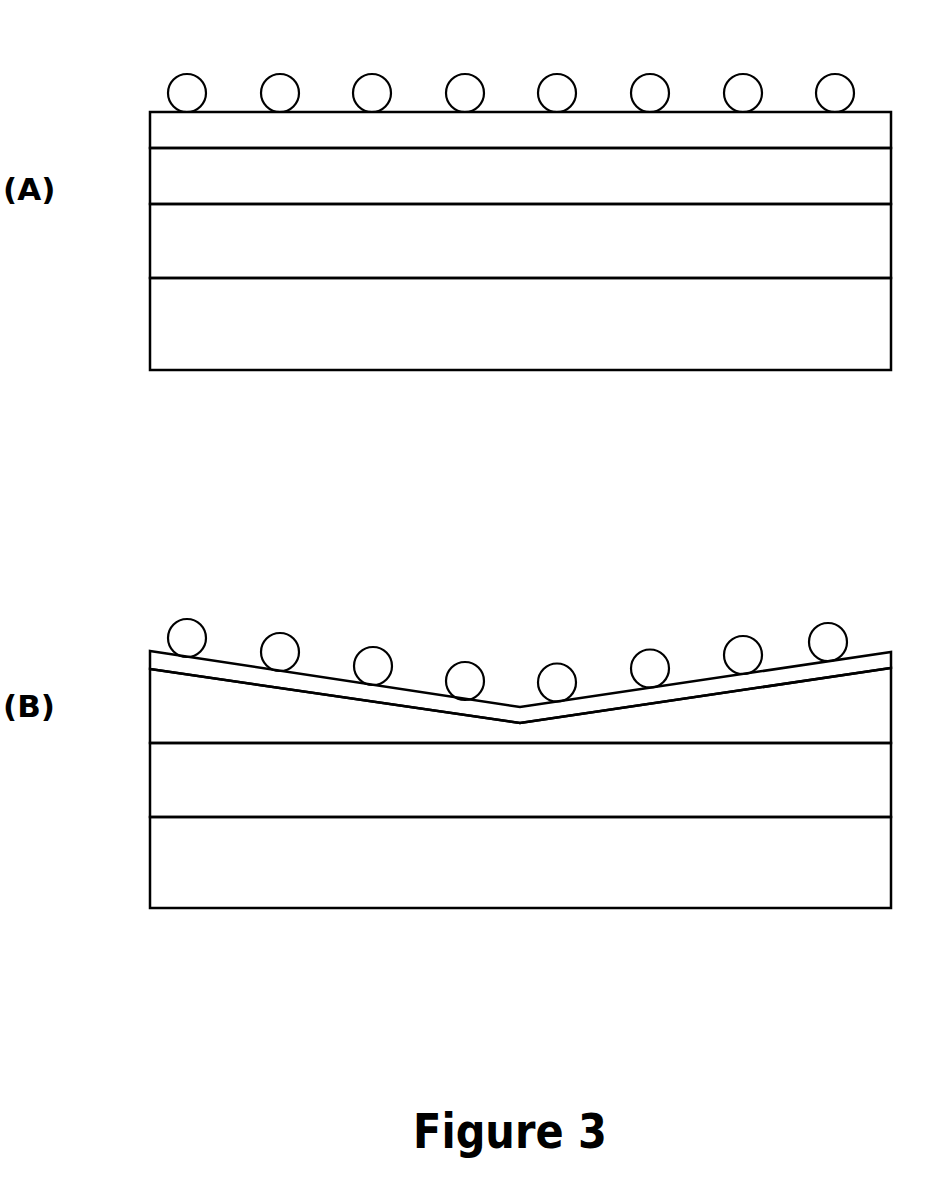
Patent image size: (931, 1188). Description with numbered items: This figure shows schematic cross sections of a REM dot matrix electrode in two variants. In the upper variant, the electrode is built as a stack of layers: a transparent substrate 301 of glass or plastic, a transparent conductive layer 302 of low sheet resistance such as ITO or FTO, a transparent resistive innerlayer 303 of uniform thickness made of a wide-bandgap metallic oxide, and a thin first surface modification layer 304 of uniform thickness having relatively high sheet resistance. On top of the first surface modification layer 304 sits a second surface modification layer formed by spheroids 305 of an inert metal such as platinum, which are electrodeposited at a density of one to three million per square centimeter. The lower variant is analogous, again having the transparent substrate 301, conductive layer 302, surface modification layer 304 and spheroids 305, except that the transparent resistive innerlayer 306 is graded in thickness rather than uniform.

The transparent substrate 301 is at (232, 334).
The transparent conductive layer 302 is at (232, 252).
The transparent resistive innerlayer 303 is at (232, 191).
The first surface modification layer 304 is at (232, 141).
The spheroids 305 is at (463, 93).
The transparent resistive innerlayer 306 is at (232, 724).